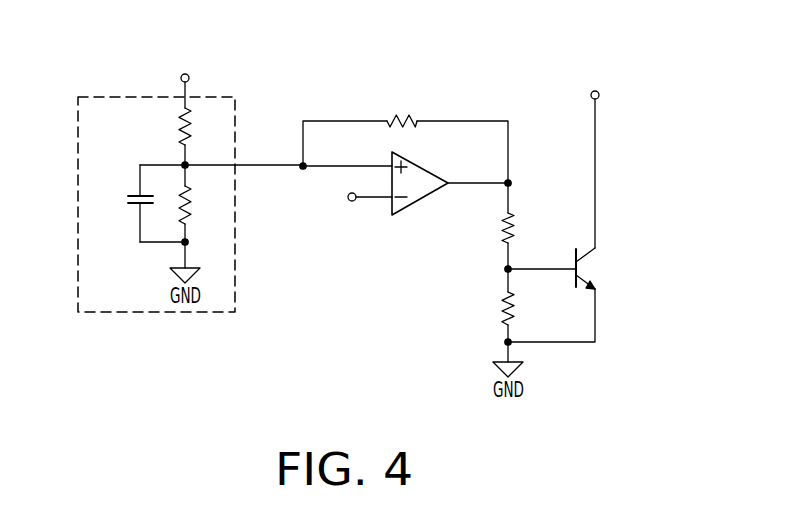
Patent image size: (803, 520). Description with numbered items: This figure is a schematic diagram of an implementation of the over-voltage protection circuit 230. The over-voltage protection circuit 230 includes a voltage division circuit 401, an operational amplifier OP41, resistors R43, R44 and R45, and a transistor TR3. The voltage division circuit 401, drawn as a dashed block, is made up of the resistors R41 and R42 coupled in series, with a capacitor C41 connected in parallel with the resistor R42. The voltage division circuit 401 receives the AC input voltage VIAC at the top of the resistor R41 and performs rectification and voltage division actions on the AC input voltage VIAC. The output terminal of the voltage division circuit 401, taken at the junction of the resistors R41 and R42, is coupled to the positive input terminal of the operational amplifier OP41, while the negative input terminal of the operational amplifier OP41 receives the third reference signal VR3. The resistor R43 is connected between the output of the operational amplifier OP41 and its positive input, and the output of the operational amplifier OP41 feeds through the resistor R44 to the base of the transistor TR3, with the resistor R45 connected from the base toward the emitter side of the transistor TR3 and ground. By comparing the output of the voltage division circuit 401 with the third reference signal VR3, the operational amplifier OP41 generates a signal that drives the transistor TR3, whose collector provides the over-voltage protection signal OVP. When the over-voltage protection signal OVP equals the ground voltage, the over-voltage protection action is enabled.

The over-voltage protection circuit 230 is at (686, 426).
The voltage division circuit 401 is at (224, 82).
The AC input voltage VIAC is at (185, 76).
The resistor R41 is at (203, 136).
The resistor R42 is at (204, 203).
The capacitor C41 is at (139, 203).
The resistor R43 is at (405, 137).
The operational amplifier OP41 is at (432, 210).
The third reference signal VR3 is at (350, 199).
The resistor R44 is at (526, 226).
The resistor R45 is at (526, 305).
The transistor TR3 is at (570, 295).
The over-voltage protection signal OVP is at (596, 156).